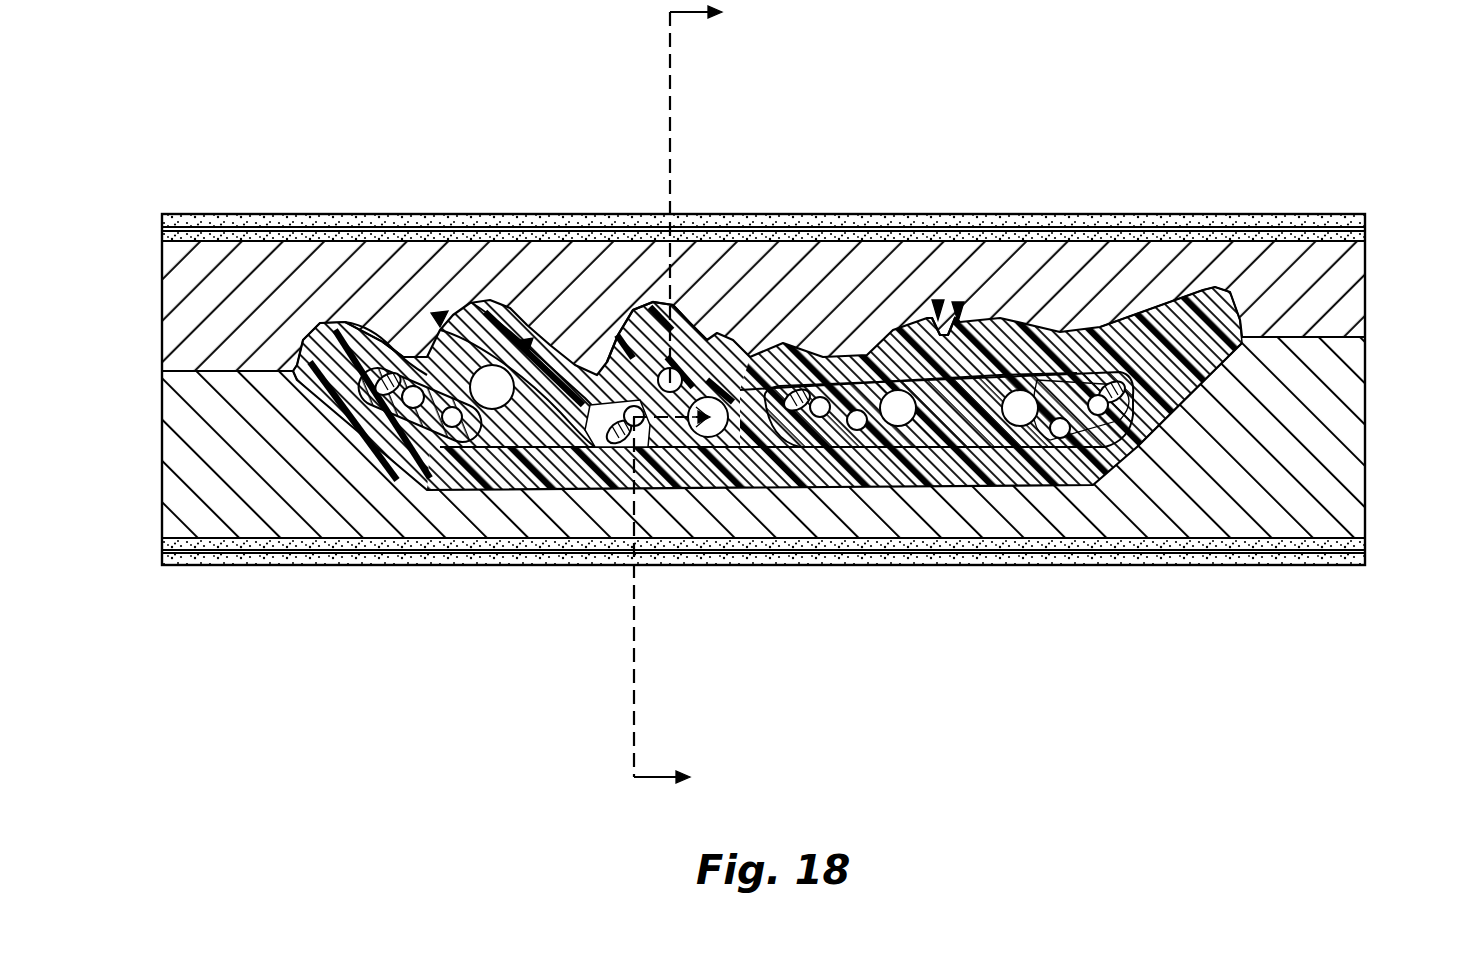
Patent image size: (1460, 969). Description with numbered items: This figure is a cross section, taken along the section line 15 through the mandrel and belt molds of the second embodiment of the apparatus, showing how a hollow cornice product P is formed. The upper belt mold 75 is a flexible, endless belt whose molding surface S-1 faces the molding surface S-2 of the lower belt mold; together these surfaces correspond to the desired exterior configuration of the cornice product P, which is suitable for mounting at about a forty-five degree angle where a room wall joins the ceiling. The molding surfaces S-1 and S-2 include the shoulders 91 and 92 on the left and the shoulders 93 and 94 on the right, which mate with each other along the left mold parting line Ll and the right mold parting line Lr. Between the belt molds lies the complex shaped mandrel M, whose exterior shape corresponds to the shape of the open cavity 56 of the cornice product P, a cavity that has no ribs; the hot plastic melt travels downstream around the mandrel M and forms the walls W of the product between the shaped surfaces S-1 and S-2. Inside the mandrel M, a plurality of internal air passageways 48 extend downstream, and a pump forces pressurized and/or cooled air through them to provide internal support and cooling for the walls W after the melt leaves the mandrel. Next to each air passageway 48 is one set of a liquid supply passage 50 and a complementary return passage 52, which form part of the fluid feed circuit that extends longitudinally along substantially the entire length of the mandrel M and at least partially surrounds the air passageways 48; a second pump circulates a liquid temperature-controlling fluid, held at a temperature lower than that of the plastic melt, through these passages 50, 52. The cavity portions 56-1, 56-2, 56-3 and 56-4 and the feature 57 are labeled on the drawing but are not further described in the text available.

The line 15-15 section line 15 is at (701, 398).
The air passageway 48 is at (897, 395).
The liquid supply passage 50 is at (672, 378).
The return passage 52 is at (392, 393).
The cavity 56 is at (925, 485).
The tape right segment 56-1 is at (1160, 445).
The tape left segment 56-2 is at (345, 400).
The tape bottom segment 56-3 is at (755, 487).
The tape upper segment 56-4 is at (750, 358).
The notch 57 is at (972, 335).
The upper belt mold 75 is at (1305, 520).
The shoulder 91 is at (205, 347).
The shoulder 92 is at (180, 413).
The shoulder 93 is at (1328, 292).
The shoulder 94 is at (1335, 378).
The molding surface S-1 is at (430, 342).
The molding surface S-2 is at (530, 447).
The mandrel M is at (530, 350).
The walls W is at (646, 335).
The cornice product P is at (958, 304).
The left mold parting line Ll is at (178, 362).
The right mold parting line Lr is at (1330, 327).